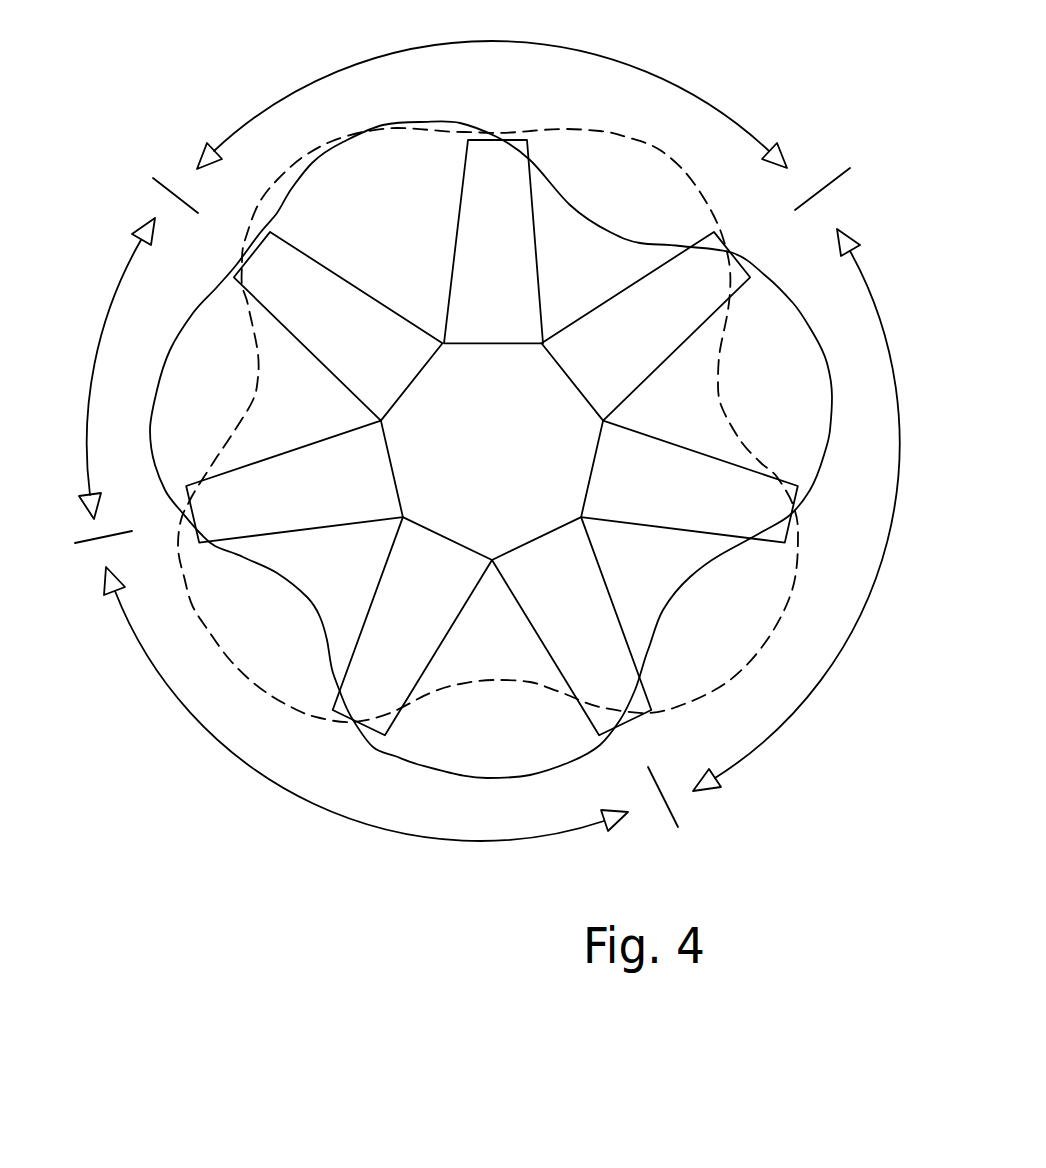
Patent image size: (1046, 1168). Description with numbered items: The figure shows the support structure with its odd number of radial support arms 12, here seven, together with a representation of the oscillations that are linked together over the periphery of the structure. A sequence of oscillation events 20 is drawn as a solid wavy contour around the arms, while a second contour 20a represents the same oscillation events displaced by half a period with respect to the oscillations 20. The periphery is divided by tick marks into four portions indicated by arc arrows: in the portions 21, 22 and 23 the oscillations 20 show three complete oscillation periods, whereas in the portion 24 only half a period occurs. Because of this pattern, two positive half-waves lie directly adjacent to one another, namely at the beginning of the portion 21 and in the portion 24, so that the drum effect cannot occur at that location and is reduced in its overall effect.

The support arm 12 is at (481, 239).
The sequence of oscillation events 20 is at (491, 449).
The oscillation events displaced by half a period 20a is at (488, 425).
The portion 21 is at (492, 87).
The portion 22 is at (800, 510).
The portion 23 is at (366, 704).
The portion 24 is at (115, 368).